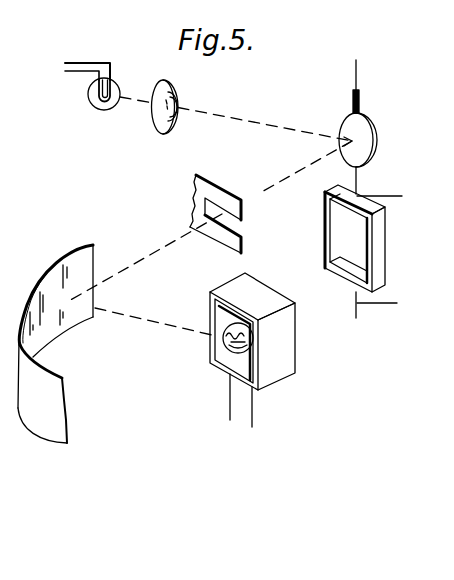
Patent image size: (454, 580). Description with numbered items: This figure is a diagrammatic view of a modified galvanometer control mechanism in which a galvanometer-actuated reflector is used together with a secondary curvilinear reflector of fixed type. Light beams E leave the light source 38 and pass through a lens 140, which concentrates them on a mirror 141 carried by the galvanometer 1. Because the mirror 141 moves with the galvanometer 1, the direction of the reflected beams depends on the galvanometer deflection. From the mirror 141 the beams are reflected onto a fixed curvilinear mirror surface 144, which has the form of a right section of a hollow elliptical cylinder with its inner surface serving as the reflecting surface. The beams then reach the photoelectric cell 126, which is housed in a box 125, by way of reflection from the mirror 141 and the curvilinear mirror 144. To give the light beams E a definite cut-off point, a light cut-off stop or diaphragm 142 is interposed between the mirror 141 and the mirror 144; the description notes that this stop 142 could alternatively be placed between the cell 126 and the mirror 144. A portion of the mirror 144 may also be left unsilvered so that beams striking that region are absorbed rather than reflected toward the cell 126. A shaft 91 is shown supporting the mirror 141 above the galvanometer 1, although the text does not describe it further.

The galvanometer 1 is at (380, 252).
The light source 38 is at (90, 105).
The shaft 91 is at (356, 75).
The box 125 is at (292, 332).
The photoelectric cell 126 is at (251, 346).
The lens 140 is at (177, 89).
The mirror 141 is at (374, 127).
The light cut-off stop or diaphragm 142 is at (242, 222).
The curvilinear mirror surface 144 is at (63, 328).
The light beams E is at (250, 120).